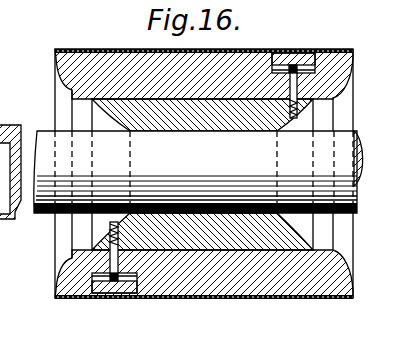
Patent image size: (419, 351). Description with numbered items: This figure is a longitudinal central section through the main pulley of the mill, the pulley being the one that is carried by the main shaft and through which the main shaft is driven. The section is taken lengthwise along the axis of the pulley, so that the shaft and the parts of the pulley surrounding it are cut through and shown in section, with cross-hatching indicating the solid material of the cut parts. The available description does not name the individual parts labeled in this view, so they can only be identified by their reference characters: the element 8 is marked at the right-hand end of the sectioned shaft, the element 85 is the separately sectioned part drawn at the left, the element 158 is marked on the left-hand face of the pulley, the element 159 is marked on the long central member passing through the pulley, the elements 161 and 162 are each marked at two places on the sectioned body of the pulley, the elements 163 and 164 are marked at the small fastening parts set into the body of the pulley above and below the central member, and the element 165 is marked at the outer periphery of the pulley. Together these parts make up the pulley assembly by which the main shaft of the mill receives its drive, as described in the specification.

The shaft end 8 is at (352, 138).
The bracket 85 is at (21, 212).
The roller flange 158 is at (56, 89).
The shaft 159 is at (195, 171).
The roller shell half 161 is at (67, 57).
The roller hub 162 is at (307, 53).
The screw 163 is at (297, 42).
The screw head 164 is at (282, 53).
The roller covering 165 is at (113, 56).